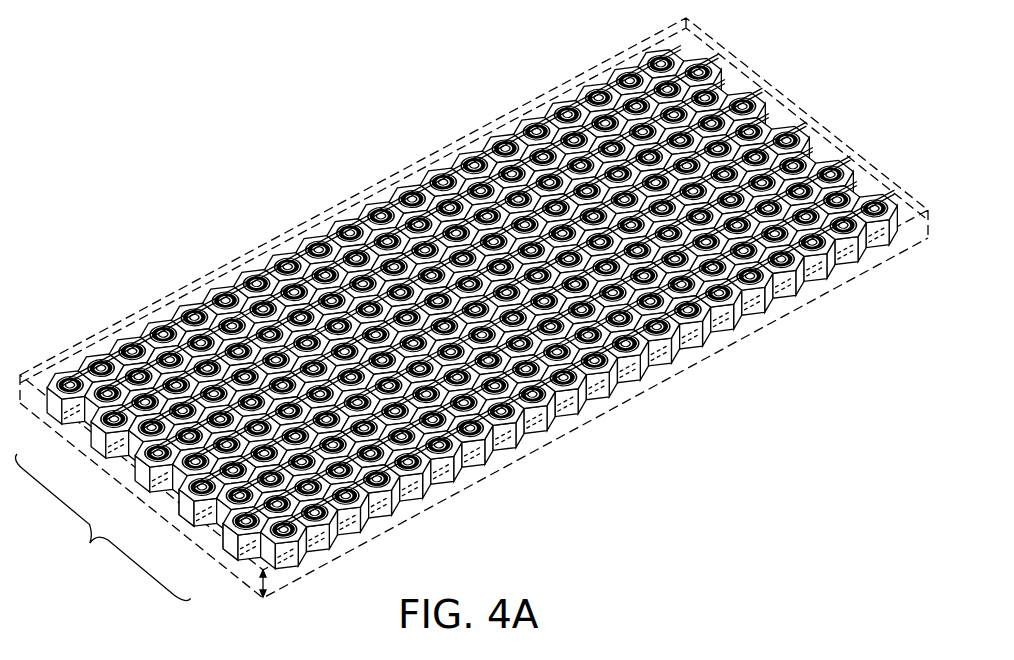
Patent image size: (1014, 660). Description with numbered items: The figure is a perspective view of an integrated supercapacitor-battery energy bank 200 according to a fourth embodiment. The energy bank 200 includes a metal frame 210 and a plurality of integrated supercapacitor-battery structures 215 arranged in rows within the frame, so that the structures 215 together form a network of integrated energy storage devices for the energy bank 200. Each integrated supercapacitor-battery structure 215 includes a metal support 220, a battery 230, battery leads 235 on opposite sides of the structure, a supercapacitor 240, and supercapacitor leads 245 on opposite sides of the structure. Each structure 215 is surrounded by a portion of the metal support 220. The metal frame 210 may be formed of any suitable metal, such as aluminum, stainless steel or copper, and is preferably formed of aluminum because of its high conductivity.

The integrated supercapacitor-battery energy bank 200 is at (471, 304).
The metal frame 210 is at (657, 377).
The integrated supercapacitor-battery structure 215 is at (102, 527).
The metal support 220 is at (181, 511).
The battery 230 is at (459, 308).
The battery leads 235 is at (134, 437).
The supercapacitor 240 is at (223, 541).
The supercapacitor leads 245 is at (262, 574).